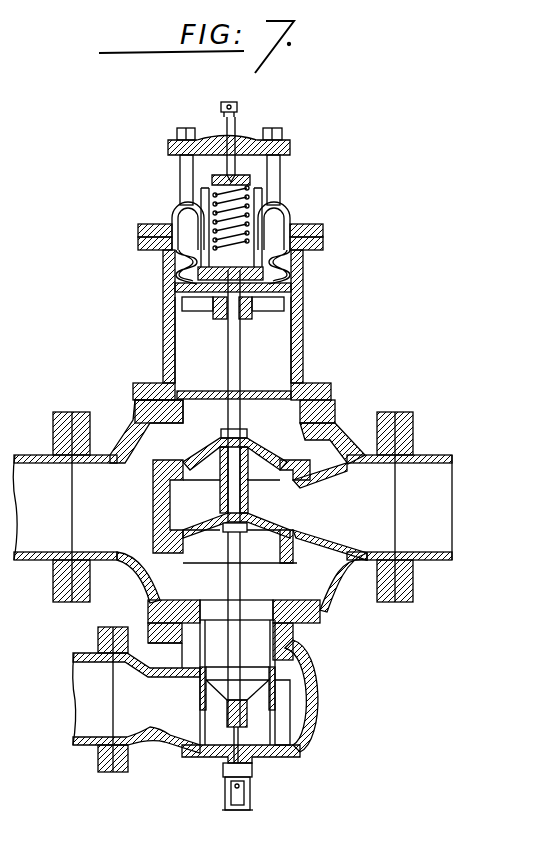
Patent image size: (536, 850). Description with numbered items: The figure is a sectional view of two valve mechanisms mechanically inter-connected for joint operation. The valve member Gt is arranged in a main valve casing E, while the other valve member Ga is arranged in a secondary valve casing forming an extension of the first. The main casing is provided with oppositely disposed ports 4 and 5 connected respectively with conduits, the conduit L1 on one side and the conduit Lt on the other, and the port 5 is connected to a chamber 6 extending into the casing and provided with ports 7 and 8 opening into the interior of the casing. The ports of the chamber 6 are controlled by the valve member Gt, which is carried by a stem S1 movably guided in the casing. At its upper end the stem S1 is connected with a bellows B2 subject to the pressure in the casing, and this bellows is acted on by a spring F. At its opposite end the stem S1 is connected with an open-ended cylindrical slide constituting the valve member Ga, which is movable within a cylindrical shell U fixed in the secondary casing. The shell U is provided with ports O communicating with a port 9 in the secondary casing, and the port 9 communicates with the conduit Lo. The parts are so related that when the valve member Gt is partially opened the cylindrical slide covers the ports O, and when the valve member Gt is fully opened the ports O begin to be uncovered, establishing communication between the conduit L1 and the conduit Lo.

The spring F is at (257, 203).
The bellows B2 is at (177, 262).
The stem S1 is at (229, 348).
The main valve casing E is at (142, 447).
The conduit L1 is at (27, 456).
The port 4 is at (75, 507).
The port 8 is at (190, 470).
The chamber 6 is at (186, 506).
The port 7 is at (207, 551).
The valve member Gt is at (293, 452).
The port 5 is at (372, 507).
The conduit Lt is at (440, 563).
The conduit Lo is at (80, 654).
The valve member Ga is at (198, 678).
The port 9 is at (113, 699).
The cylindrical shell U is at (277, 676).
The ports O is at (280, 690).